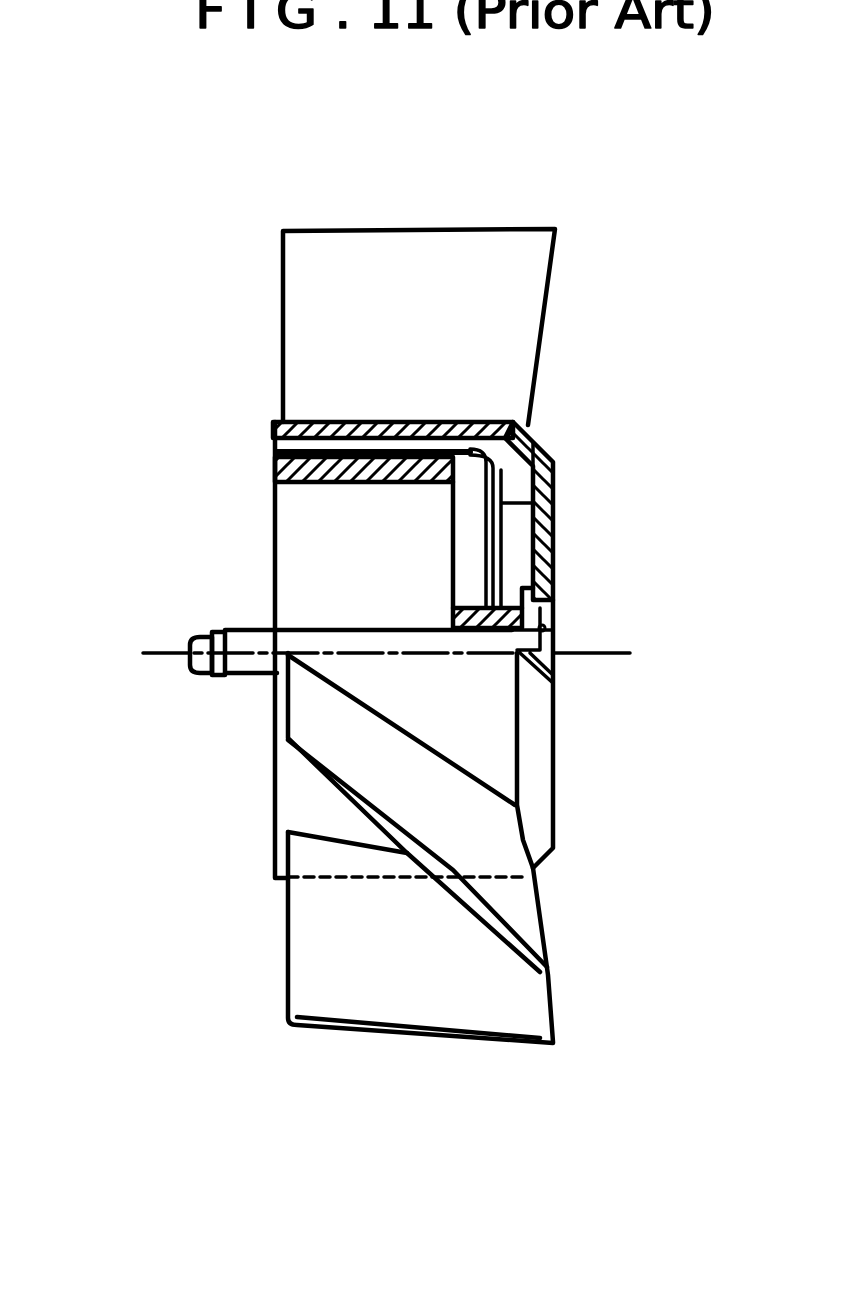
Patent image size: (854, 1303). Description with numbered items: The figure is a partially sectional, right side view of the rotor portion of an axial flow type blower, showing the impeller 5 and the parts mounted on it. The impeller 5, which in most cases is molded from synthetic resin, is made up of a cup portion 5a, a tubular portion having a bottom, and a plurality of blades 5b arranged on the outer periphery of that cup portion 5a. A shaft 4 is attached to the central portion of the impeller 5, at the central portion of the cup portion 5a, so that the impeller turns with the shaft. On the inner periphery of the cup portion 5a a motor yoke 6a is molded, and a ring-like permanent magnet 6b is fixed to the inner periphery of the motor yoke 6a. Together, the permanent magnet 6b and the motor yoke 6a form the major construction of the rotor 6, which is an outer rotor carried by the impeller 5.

The shaft 4 is at (255, 675).
The impeller 5 is at (322, 1042).
The cup portion 5a is at (540, 437).
The blades 5b is at (333, 292).
The rotor 6 is at (260, 495).
The motor yoke 6a is at (277, 457).
The permanent magnet 6b is at (275, 497).